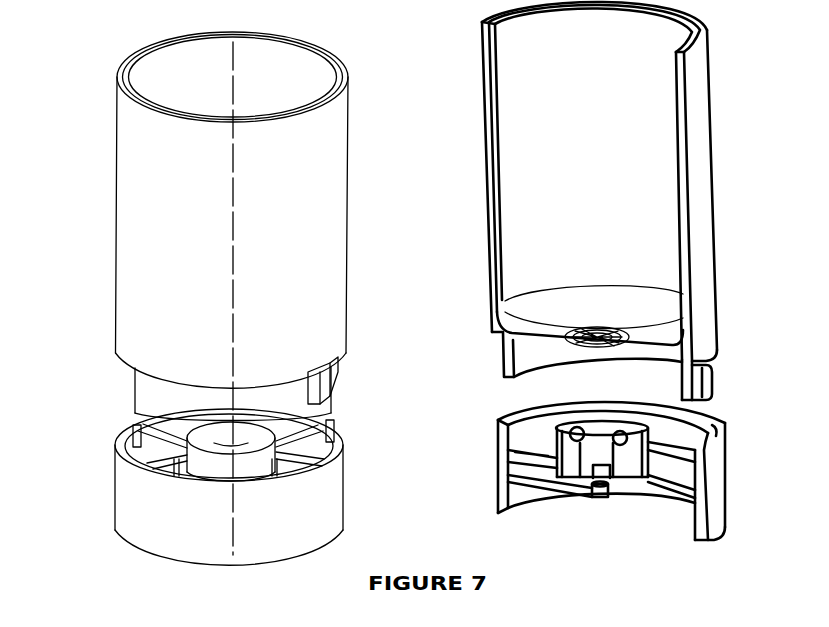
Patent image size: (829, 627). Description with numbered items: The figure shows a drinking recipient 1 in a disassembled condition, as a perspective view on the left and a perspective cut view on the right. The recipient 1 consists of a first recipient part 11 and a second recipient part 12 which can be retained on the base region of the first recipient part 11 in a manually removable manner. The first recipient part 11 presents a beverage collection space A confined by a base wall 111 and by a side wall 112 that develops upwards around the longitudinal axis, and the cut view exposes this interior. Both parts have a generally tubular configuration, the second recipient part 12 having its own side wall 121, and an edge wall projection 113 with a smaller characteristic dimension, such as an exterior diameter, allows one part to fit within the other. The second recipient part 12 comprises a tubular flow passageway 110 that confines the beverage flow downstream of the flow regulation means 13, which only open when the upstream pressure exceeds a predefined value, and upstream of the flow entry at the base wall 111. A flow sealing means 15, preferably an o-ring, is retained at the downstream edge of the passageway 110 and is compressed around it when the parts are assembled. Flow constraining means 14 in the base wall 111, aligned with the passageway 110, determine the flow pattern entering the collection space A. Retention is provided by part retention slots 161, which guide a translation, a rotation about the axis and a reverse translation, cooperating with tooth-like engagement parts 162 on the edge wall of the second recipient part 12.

The drinking recipient 1 is at (253, 279).
The first recipient part 11 is at (232, 226).
The second recipient part 12 is at (229, 487).
The flow regulation means 13 is at (596, 507).
The flow constraining means 14 is at (609, 326).
The flow sealing means 15 is at (603, 457).
The flow passageway 110 is at (598, 418).
The base wall 111 is at (565, 315).
The side wall 112 is at (629, 191).
The edge wall projection 113 is at (479, 354).
The side wall of second recipient part 121 is at (580, 471).
The part retention slot 161 is at (543, 377).
The engagement part 162 is at (128, 427).
The beverage collection space A is at (594, 77).